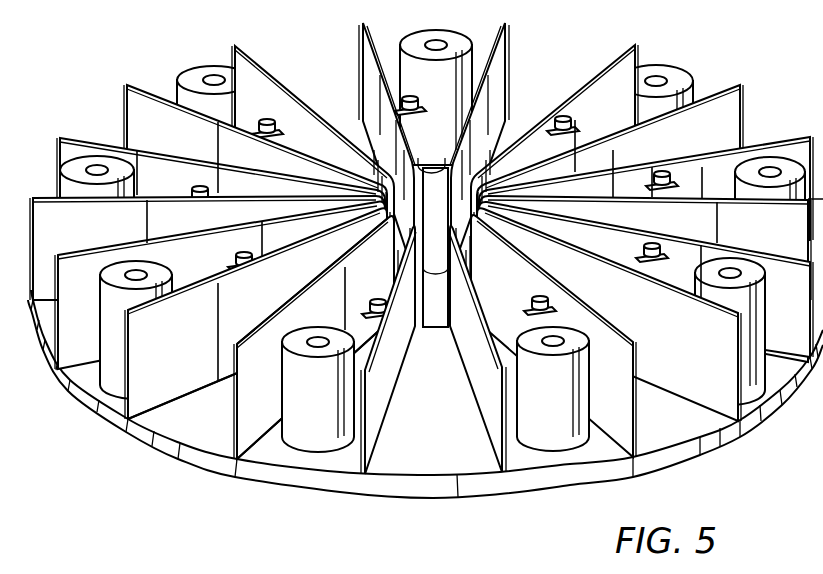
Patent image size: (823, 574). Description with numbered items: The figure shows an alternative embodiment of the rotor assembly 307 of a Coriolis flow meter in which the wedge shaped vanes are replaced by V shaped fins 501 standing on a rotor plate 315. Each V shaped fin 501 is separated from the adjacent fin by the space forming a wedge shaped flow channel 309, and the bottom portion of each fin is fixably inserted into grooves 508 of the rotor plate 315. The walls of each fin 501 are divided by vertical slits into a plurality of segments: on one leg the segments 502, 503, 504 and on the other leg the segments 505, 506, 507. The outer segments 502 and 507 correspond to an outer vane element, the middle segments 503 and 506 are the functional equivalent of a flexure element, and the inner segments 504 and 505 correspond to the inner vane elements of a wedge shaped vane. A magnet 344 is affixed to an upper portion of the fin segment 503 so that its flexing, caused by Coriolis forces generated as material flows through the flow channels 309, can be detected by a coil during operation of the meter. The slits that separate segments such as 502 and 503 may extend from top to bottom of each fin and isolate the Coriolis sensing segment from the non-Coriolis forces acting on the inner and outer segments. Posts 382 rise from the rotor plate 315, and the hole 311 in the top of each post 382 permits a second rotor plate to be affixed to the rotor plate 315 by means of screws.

The V shaped fin 501 is at (418, 281).
The fin segment 502 is at (145, 390).
The fin segment 503 is at (236, 322).
The fin segment 504 is at (318, 265).
The fin segment 505 is at (310, 186).
The fin segment 506 is at (236, 247).
The fin segment 507 is at (134, 252).
The grooves 508 is at (124, 419).
The flow channel 309 is at (222, 414).
The rotor assembly 307 is at (284, 490).
The rotor plate 315 is at (462, 485).
The post 382 is at (552, 440).
The magnet 344 is at (577, 112).
The hole 311 is at (667, 79).